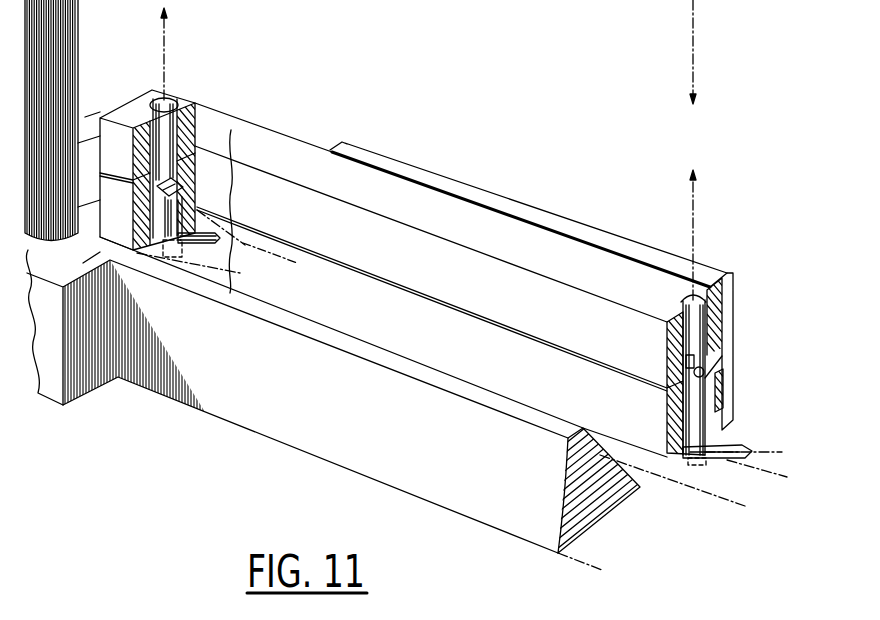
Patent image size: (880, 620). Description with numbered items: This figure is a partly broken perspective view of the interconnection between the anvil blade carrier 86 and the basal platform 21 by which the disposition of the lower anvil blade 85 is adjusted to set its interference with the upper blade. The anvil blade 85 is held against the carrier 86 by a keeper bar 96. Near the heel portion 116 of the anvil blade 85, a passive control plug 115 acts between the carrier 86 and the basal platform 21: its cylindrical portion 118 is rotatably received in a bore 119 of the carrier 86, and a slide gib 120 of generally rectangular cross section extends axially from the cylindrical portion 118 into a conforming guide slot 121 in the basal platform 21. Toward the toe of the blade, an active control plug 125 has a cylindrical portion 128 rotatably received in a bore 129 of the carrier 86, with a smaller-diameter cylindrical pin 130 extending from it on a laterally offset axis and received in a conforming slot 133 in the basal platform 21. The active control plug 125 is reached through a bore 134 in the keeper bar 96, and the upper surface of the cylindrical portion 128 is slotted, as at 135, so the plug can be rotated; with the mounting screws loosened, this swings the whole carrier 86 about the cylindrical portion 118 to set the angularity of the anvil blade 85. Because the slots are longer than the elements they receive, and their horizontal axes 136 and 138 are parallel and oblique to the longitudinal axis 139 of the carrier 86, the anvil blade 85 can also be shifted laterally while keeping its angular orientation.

The basal platform 21 is at (328, 447).
The anvil blade 85 is at (565, 224).
The keeper bar 96 is at (491, 298).
The carrier 86 is at (503, 380).
The bore in the keeper bar 134 is at (167, 128).
The cylindrical portion of the active control plug 128 is at (195, 200).
The bore in the carrier for the active control plug 129 is at (168, 171).
The active control plug 125 is at (189, 192).
The slot in the basal platform for the pin 133 is at (219, 236).
The cylindrical pin 130 is at (209, 250).
The horizontal axis of the pin slot 138 is at (288, 271).
The slot in the cylindrical portion 135 is at (190, 180).
The heel portion of the anvil blade 116 is at (711, 273).
The bore in the carrier for the passive control plug 119 is at (695, 362).
The passive control plug 115 is at (722, 395).
The cylindrical portion of the passive control plug 118 is at (698, 415).
The guide slot 121 is at (728, 452).
The slide gib 120 is at (690, 462).
The horizontal axis of the guide slot 136 is at (760, 452).
The longitudinal axis of the carrier 139 is at (792, 479).